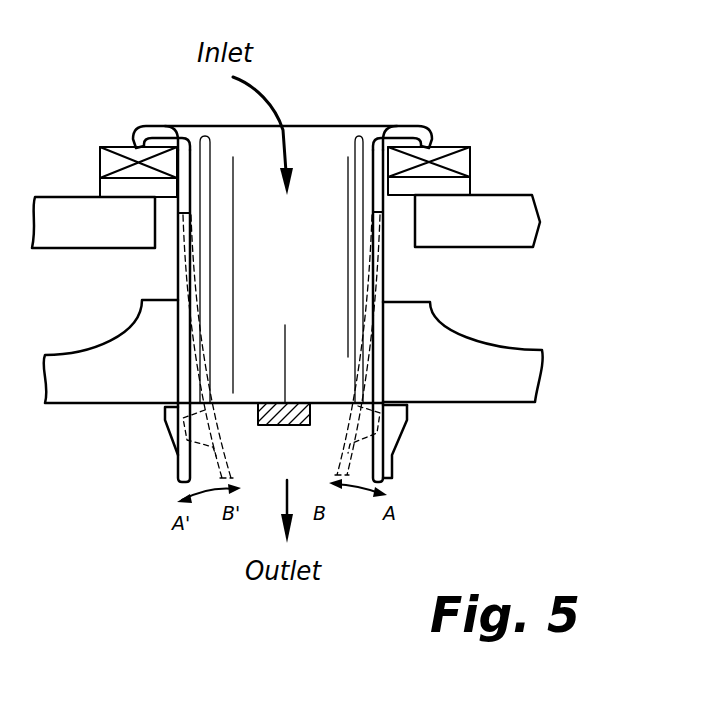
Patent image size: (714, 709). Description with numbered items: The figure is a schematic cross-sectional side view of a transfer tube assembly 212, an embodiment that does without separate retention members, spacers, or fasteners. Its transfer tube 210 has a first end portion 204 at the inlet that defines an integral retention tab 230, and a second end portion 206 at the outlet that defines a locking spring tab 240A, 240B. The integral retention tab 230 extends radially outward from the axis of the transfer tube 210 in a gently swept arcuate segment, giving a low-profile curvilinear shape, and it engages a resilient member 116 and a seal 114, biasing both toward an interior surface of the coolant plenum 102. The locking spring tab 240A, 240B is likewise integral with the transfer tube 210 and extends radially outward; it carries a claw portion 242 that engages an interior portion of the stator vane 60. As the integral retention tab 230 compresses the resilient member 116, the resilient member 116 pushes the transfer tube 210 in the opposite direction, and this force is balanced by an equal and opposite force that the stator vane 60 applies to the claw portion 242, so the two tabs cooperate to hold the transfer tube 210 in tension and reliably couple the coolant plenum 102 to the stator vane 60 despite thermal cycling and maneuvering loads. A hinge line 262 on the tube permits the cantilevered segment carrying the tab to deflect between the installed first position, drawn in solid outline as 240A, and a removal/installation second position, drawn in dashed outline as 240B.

The coolant plenum 102 is at (418, 31).
The integral retention tab 230 is at (155, 127).
The first end portion 204 is at (334, 152).
The resilient member 116 is at (463, 160).
The seal 114 is at (463, 183).
The hinge line 262 is at (393, 223).
The stator vane 60 is at (500, 357).
The transfer tube 210 is at (293, 425).
The second end portion 206 is at (225, 377).
The claw portion 242 is at (422, 416).
The locking spring tab 240A is at (392, 425).
The locking spring tab 240B is at (175, 427).
The transfer tube assembly 212 is at (145, 497).